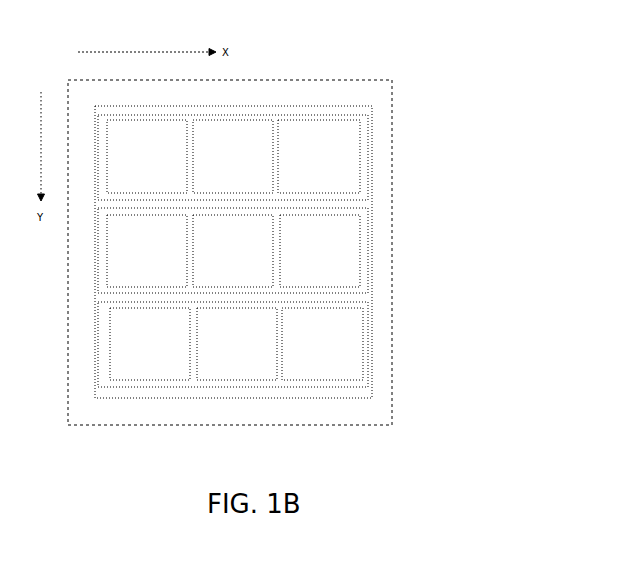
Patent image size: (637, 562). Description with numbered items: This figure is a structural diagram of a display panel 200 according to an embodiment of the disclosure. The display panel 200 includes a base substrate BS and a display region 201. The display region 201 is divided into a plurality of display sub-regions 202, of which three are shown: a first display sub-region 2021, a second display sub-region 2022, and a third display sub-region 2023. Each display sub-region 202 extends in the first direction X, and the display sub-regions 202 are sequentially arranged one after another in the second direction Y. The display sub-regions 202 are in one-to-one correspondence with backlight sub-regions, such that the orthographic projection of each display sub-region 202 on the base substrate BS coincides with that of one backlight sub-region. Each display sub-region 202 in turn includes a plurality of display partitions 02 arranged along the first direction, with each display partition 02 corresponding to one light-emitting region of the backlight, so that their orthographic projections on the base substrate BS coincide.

The display panel 200 is at (265, 234).
The base substrate BS is at (392, 393).
The display region 201 is at (372, 196).
The display sub-region 202 is at (279, 251).
The first display sub-region 2021 is at (370, 153).
The second display sub-region 2022 is at (370, 252).
The third display sub-region 2023 is at (370, 347).
The display partition 02 is at (235, 250).